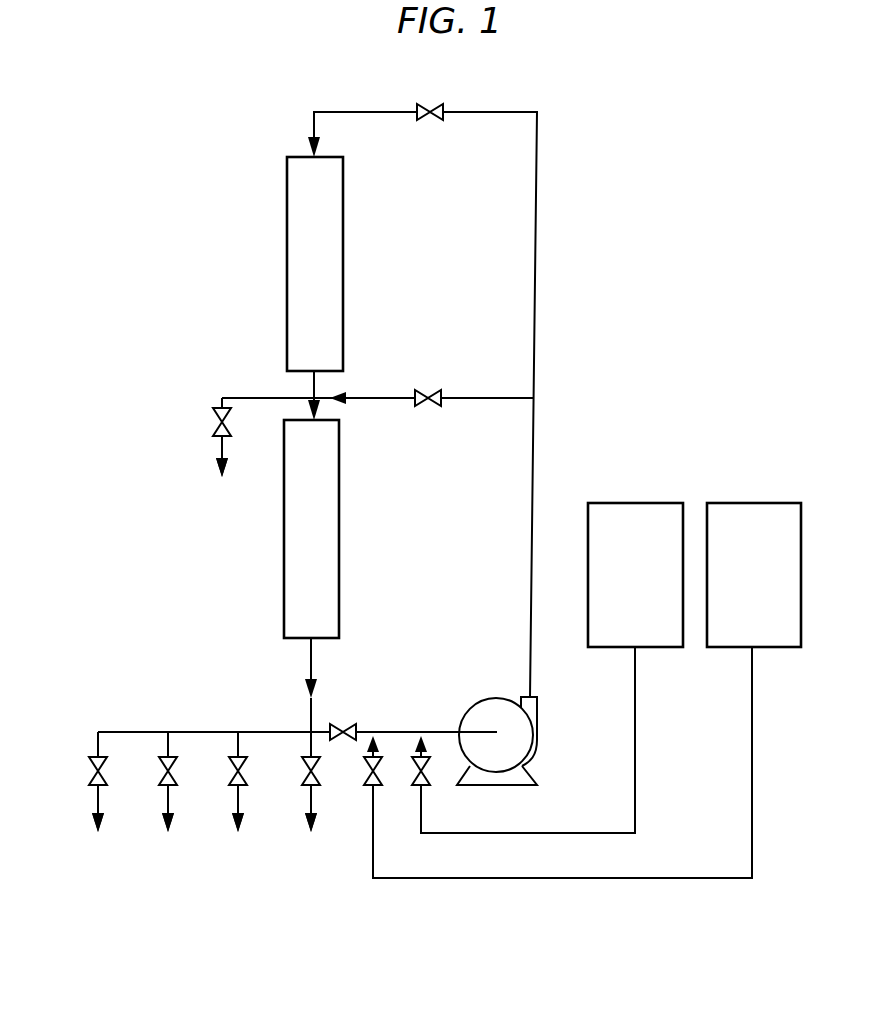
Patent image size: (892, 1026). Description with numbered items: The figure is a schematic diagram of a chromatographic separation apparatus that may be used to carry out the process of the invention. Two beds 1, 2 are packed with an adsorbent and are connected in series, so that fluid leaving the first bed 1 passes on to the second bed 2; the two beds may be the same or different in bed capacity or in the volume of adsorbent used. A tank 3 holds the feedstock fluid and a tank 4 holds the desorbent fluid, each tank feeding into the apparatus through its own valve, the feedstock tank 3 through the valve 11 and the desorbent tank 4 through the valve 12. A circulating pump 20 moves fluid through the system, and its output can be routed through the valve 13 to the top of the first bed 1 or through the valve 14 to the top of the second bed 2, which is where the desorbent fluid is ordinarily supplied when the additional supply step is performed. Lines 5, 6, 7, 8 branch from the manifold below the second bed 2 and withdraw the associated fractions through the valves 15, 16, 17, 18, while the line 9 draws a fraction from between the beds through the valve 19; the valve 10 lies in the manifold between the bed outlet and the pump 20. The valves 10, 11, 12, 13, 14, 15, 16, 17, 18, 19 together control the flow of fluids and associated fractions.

The bed 1 is at (343, 263).
The bed 2 is at (339, 517).
The tank 3 is at (665, 503).
The tank 4 is at (760, 503).
The line 5 is at (320, 824).
The line 6 is at (249, 824).
The line 7 is at (179, 824).
The line 8 is at (109, 824).
The line 9 is at (216, 457).
The valve 10 is at (355, 729).
The valve 11 is at (426, 771).
The valve 12 is at (378, 771).
The valve 13 is at (443, 110).
The valve 14 is at (440, 393).
The valve 15 is at (317, 771).
The valve 16 is at (244, 770).
The valve 17 is at (174, 770).
The valve 18 is at (104, 770).
The valve 19 is at (230, 428).
The circulating pump 20 is at (490, 697).